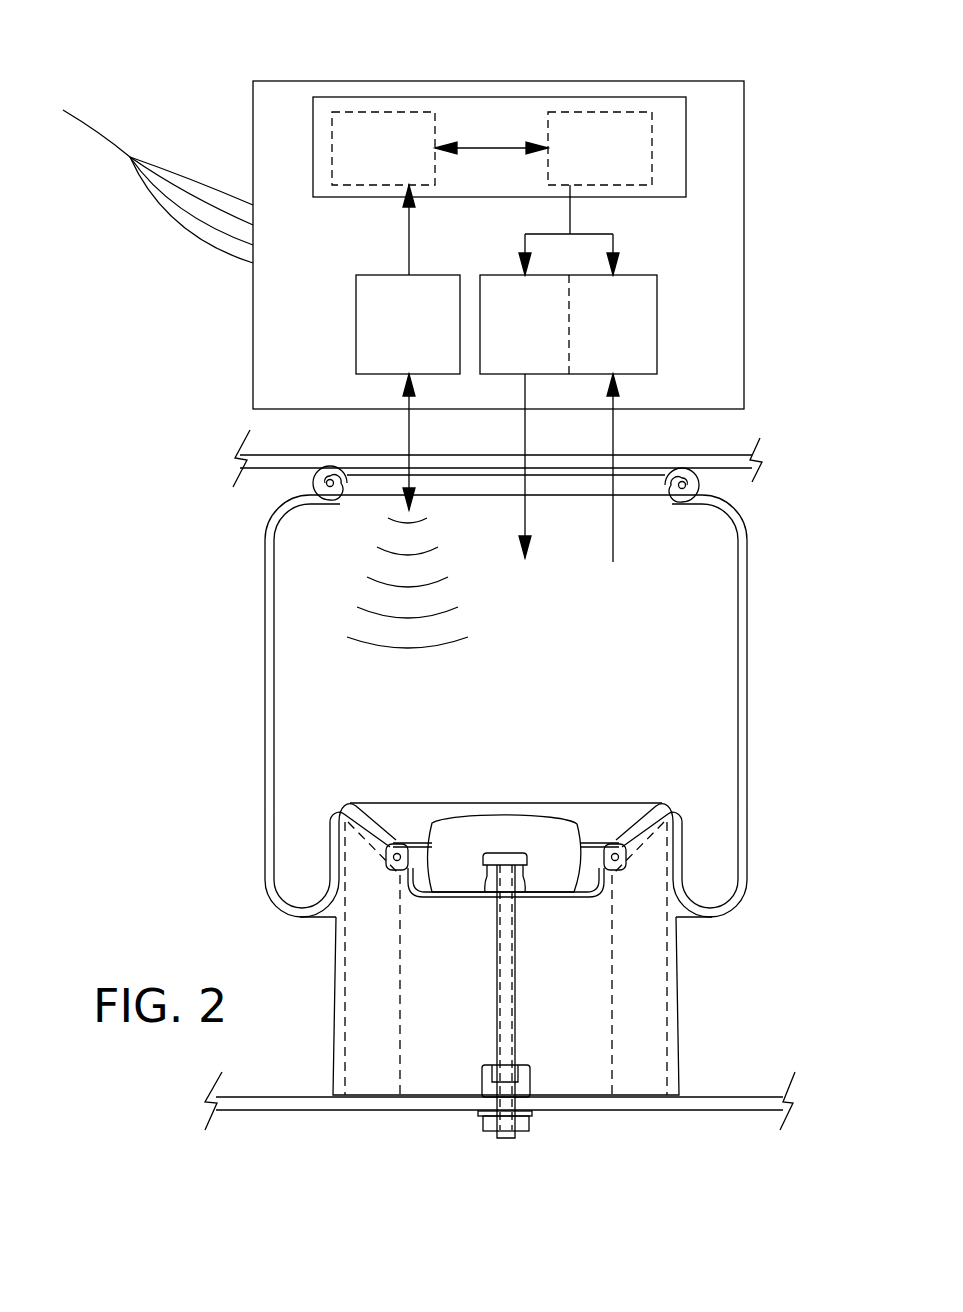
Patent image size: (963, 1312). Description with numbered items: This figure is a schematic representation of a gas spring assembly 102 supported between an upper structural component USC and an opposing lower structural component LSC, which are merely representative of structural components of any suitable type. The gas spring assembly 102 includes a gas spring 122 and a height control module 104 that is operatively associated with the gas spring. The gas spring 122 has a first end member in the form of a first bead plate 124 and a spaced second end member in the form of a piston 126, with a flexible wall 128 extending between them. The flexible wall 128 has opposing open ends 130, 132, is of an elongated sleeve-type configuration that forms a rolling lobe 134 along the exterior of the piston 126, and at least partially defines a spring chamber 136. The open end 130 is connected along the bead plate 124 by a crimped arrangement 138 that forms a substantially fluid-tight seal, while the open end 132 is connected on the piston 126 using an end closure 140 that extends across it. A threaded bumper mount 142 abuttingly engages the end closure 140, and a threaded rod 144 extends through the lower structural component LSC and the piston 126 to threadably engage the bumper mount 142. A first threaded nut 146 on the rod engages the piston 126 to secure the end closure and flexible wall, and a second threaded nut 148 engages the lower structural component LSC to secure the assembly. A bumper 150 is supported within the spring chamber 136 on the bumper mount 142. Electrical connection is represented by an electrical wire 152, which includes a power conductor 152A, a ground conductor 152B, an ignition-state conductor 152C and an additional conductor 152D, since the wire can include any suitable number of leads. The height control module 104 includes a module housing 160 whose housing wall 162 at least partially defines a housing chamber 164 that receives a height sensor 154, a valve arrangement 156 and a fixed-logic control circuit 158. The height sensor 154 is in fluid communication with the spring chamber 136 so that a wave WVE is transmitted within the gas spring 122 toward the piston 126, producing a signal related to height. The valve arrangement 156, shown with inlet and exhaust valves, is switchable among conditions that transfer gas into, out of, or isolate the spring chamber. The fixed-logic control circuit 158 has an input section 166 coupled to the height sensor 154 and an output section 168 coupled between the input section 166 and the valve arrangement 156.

The gas spring assembly 102 is at (155, 460).
The height control module 104 is at (240, 92).
The gas spring 122 is at (225, 677).
The first bead plate 124 is at (643, 475).
The piston 126 is at (675, 983).
The flexible wall 128 is at (546, 706).
The open end 130 is at (332, 510).
The open end 132 is at (627, 813).
The rolling lobe 134 is at (300, 918).
The spring chamber 136 is at (717, 650).
The crimped arrangement 138 is at (702, 483).
The end closure 140 is at (417, 860).
The threaded bumper mount 142 is at (497, 852).
The threaded rod 144 is at (500, 980).
The first threaded nut 146 is at (520, 1067).
The second threaded nut 148 is at (518, 1120).
The bumper 150 is at (515, 813).
The electrical wire 152 is at (158, 177).
The power conductor 152A is at (170, 163).
The ground conductor 152B is at (222, 205).
The ignition-state conductor 152C is at (173, 203).
The conductor lead 152D is at (223, 253).
The height sensor 154 is at (356, 312).
The valve arrangement 156 is at (657, 320).
The fixed-logic control circuit 158 is at (487, 115).
The module housing 160 is at (750, 177).
The housing wall 162 is at (687, 80).
The housing chamber 164 is at (718, 252).
The input section 166 is at (365, 115).
The output section 168 is at (588, 115).
The upper structural component USC is at (732, 455).
The lower structural component LSC is at (740, 1097).
The wave WVE is at (400, 650).